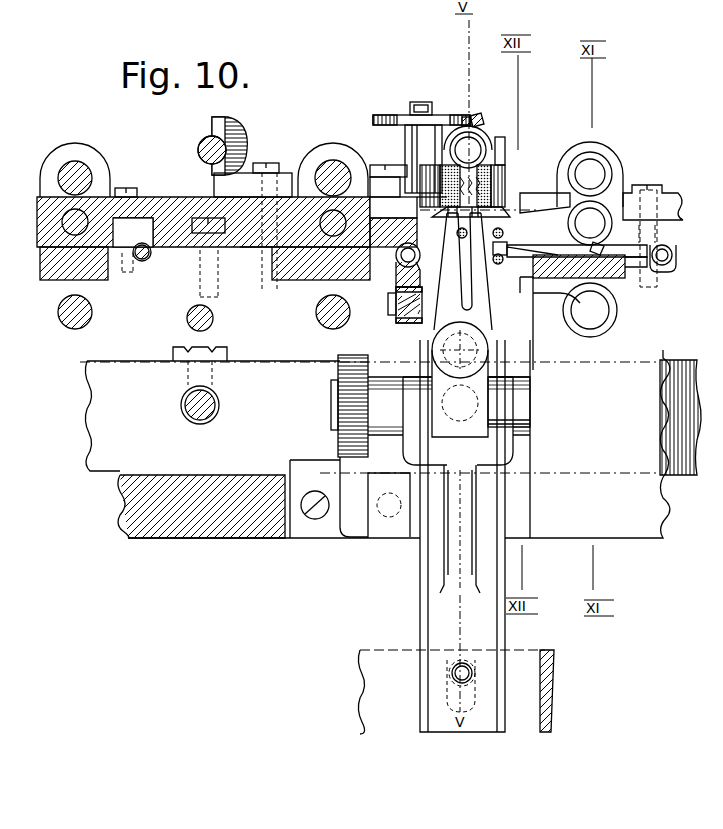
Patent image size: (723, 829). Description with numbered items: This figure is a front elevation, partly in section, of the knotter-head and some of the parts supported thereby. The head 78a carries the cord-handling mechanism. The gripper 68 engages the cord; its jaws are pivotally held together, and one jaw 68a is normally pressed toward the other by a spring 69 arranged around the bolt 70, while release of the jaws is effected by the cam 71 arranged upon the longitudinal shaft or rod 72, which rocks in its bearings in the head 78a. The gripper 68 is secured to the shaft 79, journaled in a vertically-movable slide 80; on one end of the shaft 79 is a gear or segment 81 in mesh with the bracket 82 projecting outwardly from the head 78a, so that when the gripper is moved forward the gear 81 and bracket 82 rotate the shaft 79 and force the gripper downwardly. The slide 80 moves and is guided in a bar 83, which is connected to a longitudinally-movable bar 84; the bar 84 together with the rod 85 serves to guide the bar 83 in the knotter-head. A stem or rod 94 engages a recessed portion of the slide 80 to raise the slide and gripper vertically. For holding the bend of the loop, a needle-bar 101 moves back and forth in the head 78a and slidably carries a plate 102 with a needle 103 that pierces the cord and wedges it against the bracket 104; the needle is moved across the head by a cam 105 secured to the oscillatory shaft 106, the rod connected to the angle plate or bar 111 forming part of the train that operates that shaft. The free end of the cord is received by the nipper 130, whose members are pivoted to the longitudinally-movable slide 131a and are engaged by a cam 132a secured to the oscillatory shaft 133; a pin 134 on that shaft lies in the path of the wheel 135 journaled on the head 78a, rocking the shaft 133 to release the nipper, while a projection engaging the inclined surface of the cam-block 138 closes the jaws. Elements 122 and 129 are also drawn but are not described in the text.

The stud 122 is at (72, 177).
The oscillatory shaft 106 is at (72, 227).
The longitudinal shaft or rod 72 is at (145, 260).
The cam-block 138 is at (222, 123).
The oscillatory shaft 133 is at (198, 150).
The angle plate or bar 111 is at (200, 210).
The rod 85 is at (200, 320).
The longitudinally-movable bar 84 is at (193, 403).
The gear or segment 81 is at (340, 372).
The bracket 82 is at (348, 457).
The shaft 79 is at (525, 412).
The vertically-movable slide 80 is at (480, 457).
The head 78a is at (683, 435).
The bar 83 is at (527, 540).
The stem or rod 94 is at (463, 677).
The cam 71 is at (417, 268).
The bolt 70 is at (390, 306).
The spring 69 is at (400, 316).
The gripper 68 is at (446, 401).
The gripper jaw 68a is at (462, 300).
The wheel 135 is at (385, 115).
The pin 134 is at (468, 118).
The cam 132a is at (490, 133).
The nipper 130 is at (477, 177).
The longitudinally-movable slide 131a is at (500, 213).
The roller 129 is at (545, 200).
The bracket 104 is at (500, 246).
The needle 103 is at (533, 250).
The needle-bar 101 is at (612, 277).
The plate 102 is at (650, 280).
The cam 105 is at (625, 213).